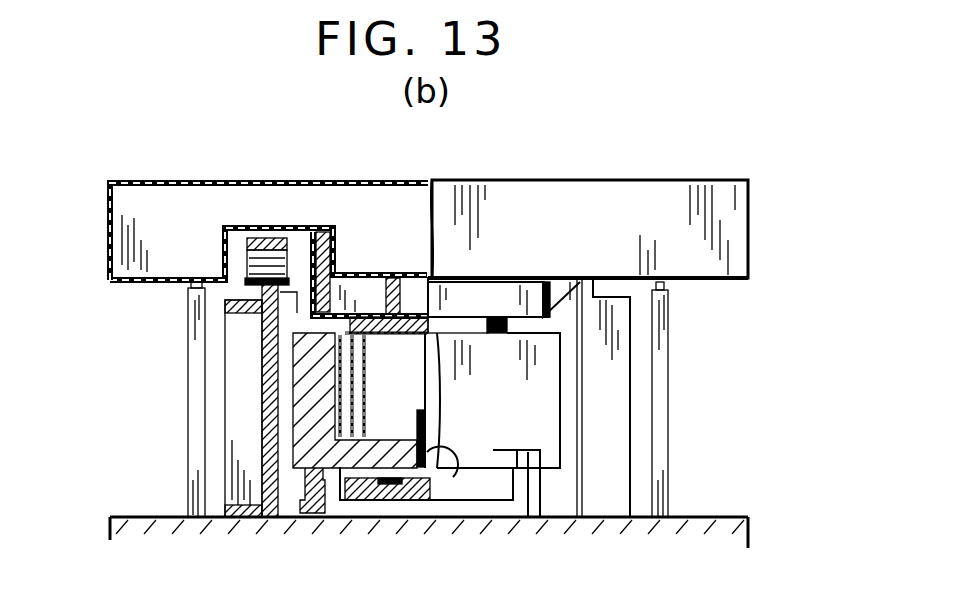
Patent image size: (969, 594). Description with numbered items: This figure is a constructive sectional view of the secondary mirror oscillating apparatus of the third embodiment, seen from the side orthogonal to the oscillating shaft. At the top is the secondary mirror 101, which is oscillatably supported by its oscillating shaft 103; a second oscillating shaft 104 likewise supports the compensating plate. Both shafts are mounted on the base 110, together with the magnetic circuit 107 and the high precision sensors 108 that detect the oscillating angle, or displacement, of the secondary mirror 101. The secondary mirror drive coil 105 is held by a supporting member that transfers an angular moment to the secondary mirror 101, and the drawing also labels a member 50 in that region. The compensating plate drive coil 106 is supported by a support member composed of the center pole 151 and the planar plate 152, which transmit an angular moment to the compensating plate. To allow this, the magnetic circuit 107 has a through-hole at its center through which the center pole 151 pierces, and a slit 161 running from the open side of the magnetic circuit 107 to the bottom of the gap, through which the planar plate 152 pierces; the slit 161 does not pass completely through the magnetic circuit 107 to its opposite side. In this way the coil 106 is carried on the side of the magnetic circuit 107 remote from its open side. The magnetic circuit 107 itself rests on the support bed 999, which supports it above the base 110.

The carriage bracket 50 is at (322, 295).
The secondary mirror 101 is at (653, 188).
The oscillating shaft 103 is at (250, 262).
The oscillating shaft 104 is at (520, 458).
The secondary mirror drive coil 105 is at (352, 358).
The compensating plate drive coil 106 is at (362, 440).
The magnetic circuit 107 is at (300, 443).
The high precision sensor 108 is at (190, 284).
The base 110 is at (258, 398).
The center pole 151 is at (428, 455).
The planar plate 152 is at (377, 350).
The slit 161 is at (417, 412).
The support bed 999 is at (302, 515).